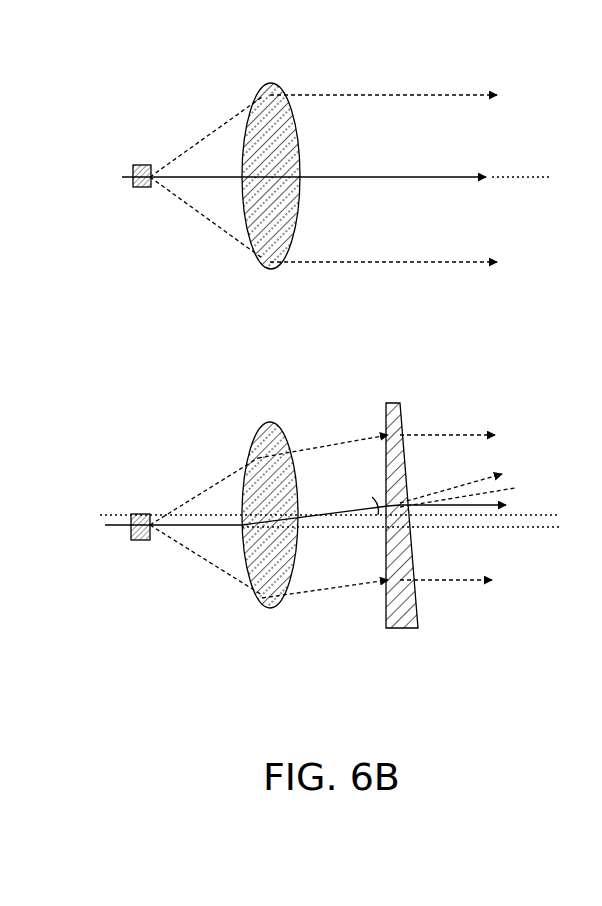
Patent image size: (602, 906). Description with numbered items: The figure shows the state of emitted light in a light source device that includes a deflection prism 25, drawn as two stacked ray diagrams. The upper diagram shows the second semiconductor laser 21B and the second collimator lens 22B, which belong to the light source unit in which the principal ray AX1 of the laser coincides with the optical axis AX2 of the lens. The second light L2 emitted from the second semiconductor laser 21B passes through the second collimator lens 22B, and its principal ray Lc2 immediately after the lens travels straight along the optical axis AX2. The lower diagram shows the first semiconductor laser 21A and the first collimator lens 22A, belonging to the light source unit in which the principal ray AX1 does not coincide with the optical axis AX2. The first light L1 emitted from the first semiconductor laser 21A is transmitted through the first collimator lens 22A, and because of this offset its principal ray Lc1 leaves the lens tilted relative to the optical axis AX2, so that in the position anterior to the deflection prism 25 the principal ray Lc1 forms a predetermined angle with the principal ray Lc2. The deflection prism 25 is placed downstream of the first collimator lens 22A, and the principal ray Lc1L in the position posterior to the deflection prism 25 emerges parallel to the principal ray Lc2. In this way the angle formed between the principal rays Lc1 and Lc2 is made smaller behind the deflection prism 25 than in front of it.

The second semiconductor laser 21B is at (142, 189).
The second collimator lens 22B is at (266, 262).
The second light L2 is at (222, 118).
The principal ray of the second light Lc2 is at (389, 177).
The principal ray AX1 is at (206, 180).
The optical axis AX2 is at (538, 176).
The first semiconductor laser 21A is at (143, 542).
The first collimator lens 22A is at (265, 606).
The first light L1 is at (225, 475).
The principal ray of the first light Lc1 is at (362, 505).
The principal ray posterior to the deflection prism Lc1L is at (478, 488).
The deflection prism 25 is at (405, 630).